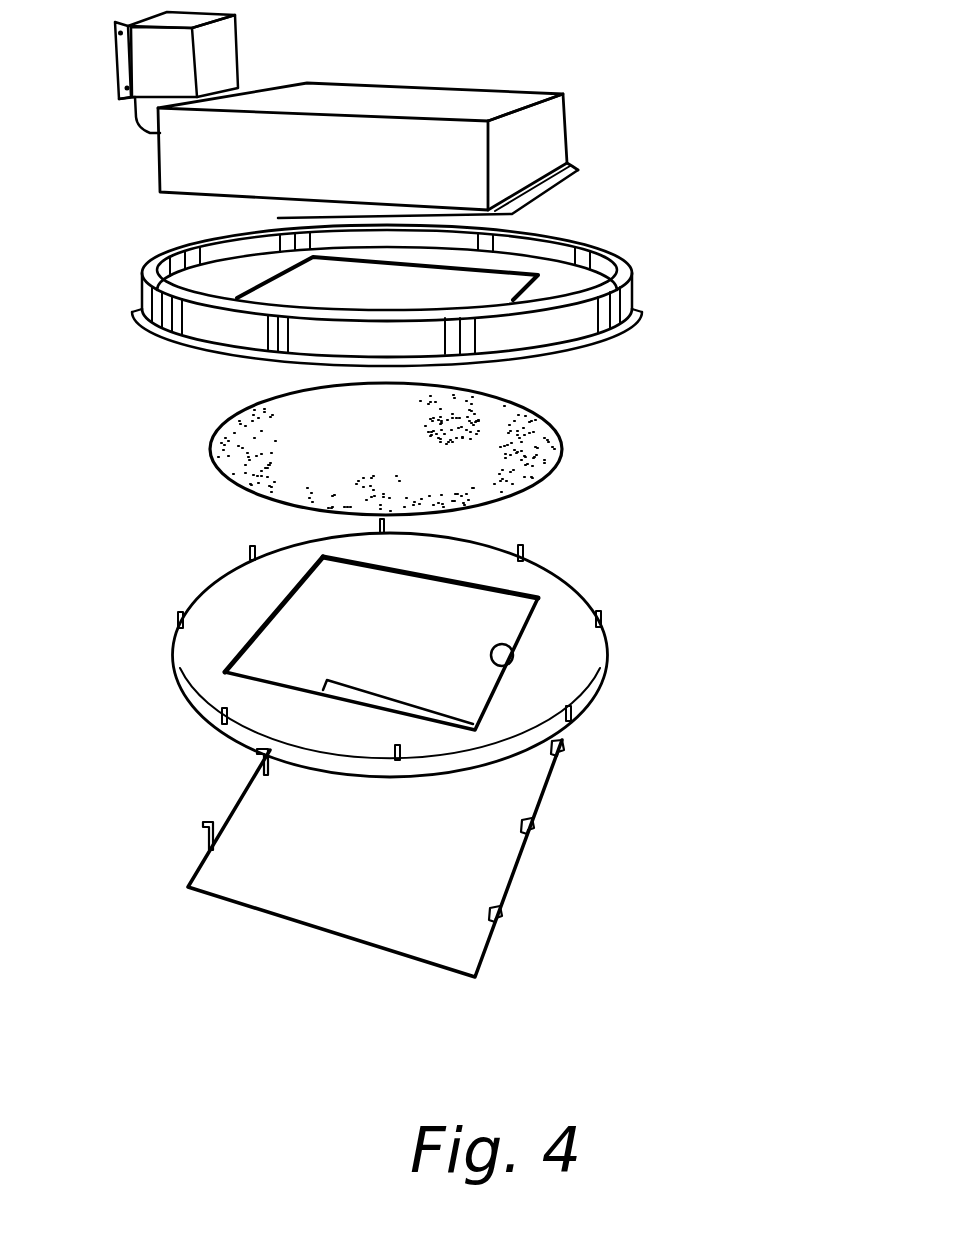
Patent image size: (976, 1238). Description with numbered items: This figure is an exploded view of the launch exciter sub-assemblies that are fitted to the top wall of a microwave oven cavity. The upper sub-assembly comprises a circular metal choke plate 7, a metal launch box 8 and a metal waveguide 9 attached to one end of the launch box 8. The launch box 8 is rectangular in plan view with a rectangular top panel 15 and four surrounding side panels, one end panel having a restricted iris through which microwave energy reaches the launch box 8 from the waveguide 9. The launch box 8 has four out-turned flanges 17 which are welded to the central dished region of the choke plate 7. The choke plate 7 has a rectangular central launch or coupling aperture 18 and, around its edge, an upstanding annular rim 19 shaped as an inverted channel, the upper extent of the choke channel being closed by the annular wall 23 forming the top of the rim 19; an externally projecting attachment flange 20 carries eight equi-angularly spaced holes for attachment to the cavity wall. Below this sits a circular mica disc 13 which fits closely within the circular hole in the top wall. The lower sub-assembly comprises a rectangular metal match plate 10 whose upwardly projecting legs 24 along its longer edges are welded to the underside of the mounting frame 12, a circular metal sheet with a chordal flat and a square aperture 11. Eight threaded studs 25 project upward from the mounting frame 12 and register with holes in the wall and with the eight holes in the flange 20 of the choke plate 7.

The choke plate 7 is at (632, 298).
The launch box 8 is at (533, 150).
The waveguide 9 is at (215, 68).
The match plate 10 is at (465, 853).
The square aperture 11 is at (513, 667).
The mounting frame 12 is at (560, 683).
The mica disc 13 is at (562, 447).
The top panel 15 is at (428, 95).
The out-turned flanges 17 is at (550, 188).
The launch aperture 18 is at (293, 267).
The annular rim 19 is at (151, 263).
The attachment flange 20 is at (135, 310).
The annular wall 23 is at (616, 264).
The legs 24 is at (203, 830).
The threaded studs 25 is at (210, 720).